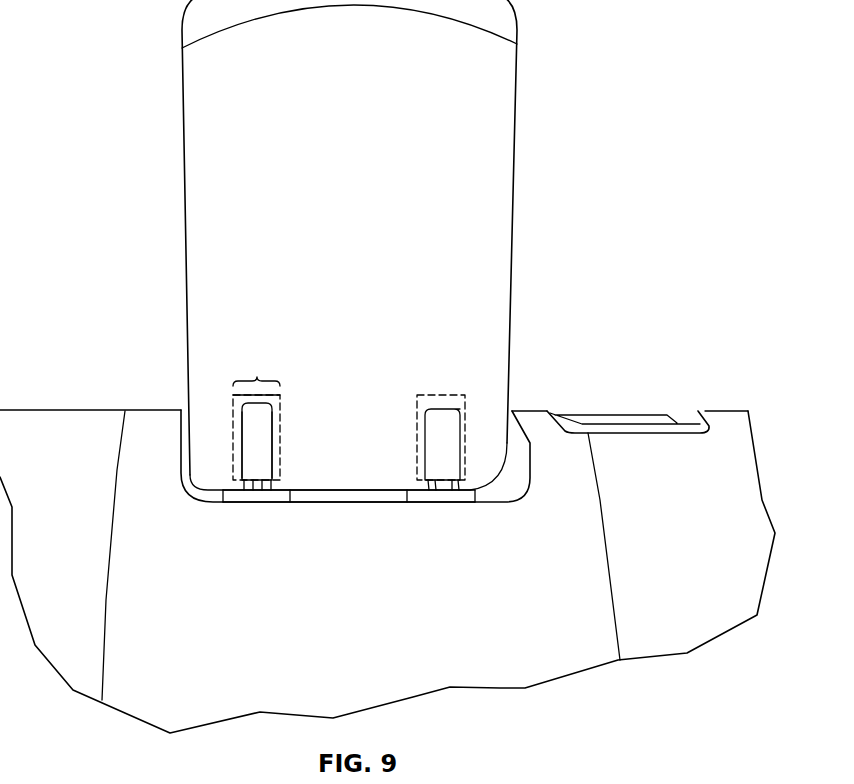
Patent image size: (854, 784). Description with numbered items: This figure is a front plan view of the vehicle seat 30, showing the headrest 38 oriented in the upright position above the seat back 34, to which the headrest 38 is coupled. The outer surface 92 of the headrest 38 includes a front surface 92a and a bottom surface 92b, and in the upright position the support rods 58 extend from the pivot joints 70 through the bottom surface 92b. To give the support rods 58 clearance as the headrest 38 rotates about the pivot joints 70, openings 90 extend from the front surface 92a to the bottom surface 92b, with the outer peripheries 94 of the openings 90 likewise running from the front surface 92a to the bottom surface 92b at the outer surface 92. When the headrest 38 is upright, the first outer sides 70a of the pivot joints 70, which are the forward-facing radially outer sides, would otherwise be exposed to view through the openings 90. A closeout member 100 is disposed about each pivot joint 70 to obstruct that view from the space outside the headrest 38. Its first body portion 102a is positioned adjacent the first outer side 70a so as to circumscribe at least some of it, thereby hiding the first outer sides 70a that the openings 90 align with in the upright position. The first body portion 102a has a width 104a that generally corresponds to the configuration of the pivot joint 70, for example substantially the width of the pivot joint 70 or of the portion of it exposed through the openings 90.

The vehicle seat 30 is at (329, 311).
The seat back 34 is at (675, 480).
The headrest 38 is at (487, 43).
The support rods 58 is at (263, 470).
The pivot joints 70 is at (354, 551).
The first outer sides 70a is at (443, 485).
The openings 90 is at (255, 415).
The outer surface 92 is at (368, 52).
The front surface 92a is at (363, 347).
The bottom surface 92b is at (373, 502).
The outer peripheries 94 is at (235, 428).
The closeout member 100 is at (285, 408).
The first body portion 102a is at (262, 452).
The width 104a is at (259, 371).